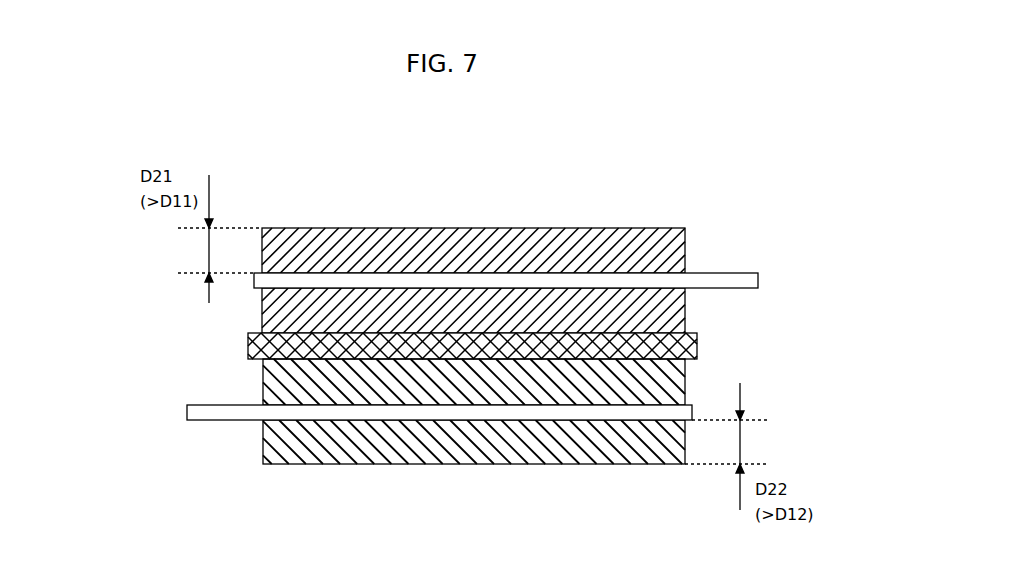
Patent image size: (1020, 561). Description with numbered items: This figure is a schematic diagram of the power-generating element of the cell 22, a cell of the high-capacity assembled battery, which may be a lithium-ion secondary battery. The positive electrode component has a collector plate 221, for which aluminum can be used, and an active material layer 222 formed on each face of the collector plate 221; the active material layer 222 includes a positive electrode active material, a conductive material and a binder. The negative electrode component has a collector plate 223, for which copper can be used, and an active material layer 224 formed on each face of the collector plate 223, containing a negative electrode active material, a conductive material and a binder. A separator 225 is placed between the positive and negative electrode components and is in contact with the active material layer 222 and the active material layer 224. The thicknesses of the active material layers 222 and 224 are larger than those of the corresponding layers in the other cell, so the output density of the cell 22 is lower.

The cell 22 is at (792, 226).
The collector plate 221 is at (723, 282).
The active material layer 222 is at (448, 315).
The collector plate 223 is at (227, 416).
The active material layer 224 is at (525, 380).
The separator 225 is at (697, 345).